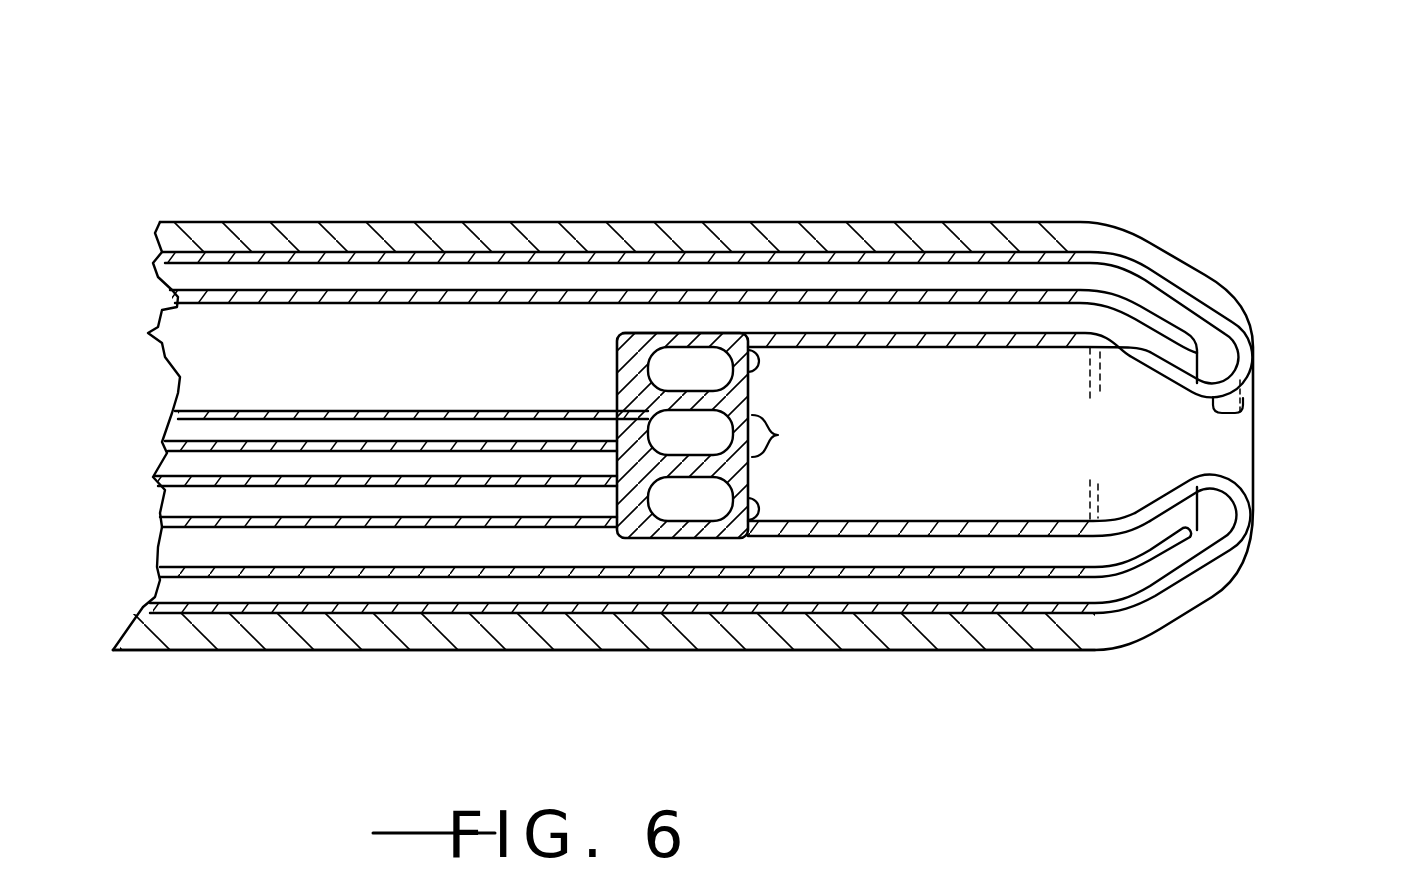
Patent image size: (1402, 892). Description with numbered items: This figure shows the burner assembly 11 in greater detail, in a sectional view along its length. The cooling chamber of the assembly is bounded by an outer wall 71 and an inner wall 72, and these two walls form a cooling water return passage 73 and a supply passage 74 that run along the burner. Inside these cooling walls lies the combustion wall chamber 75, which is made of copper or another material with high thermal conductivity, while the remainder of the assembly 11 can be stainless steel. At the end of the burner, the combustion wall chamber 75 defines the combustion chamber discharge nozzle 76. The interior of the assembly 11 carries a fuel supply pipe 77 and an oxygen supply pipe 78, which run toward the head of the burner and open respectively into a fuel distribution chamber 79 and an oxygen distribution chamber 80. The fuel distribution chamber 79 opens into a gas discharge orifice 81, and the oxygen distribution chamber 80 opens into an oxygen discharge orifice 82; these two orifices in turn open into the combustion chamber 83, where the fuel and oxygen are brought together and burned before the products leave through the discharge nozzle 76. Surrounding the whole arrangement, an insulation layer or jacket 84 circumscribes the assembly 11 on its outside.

The assembly 11 is at (305, 145).
The outer wall 71 is at (622, 262).
The inner wall 72 is at (740, 290).
The cooling water return passage 73 is at (848, 278).
The supply passage 74 is at (922, 322).
The combustion wall chamber 75 is at (998, 332).
The combustion chamber discharge nozzle 76 is at (1253, 412).
The fuel supply pipe 77 is at (309, 430).
The oxygen supply pipe 78 is at (377, 497).
The fuel distribution chamber 79 is at (673, 428).
The oxygen distribution chamber 80 is at (663, 367).
The gas discharge orifice 81 is at (778, 435).
The oxygen discharge orifice 82 is at (750, 372).
The combustion chamber 83 is at (1045, 444).
The insulation layer or jacket 84 is at (1110, 650).